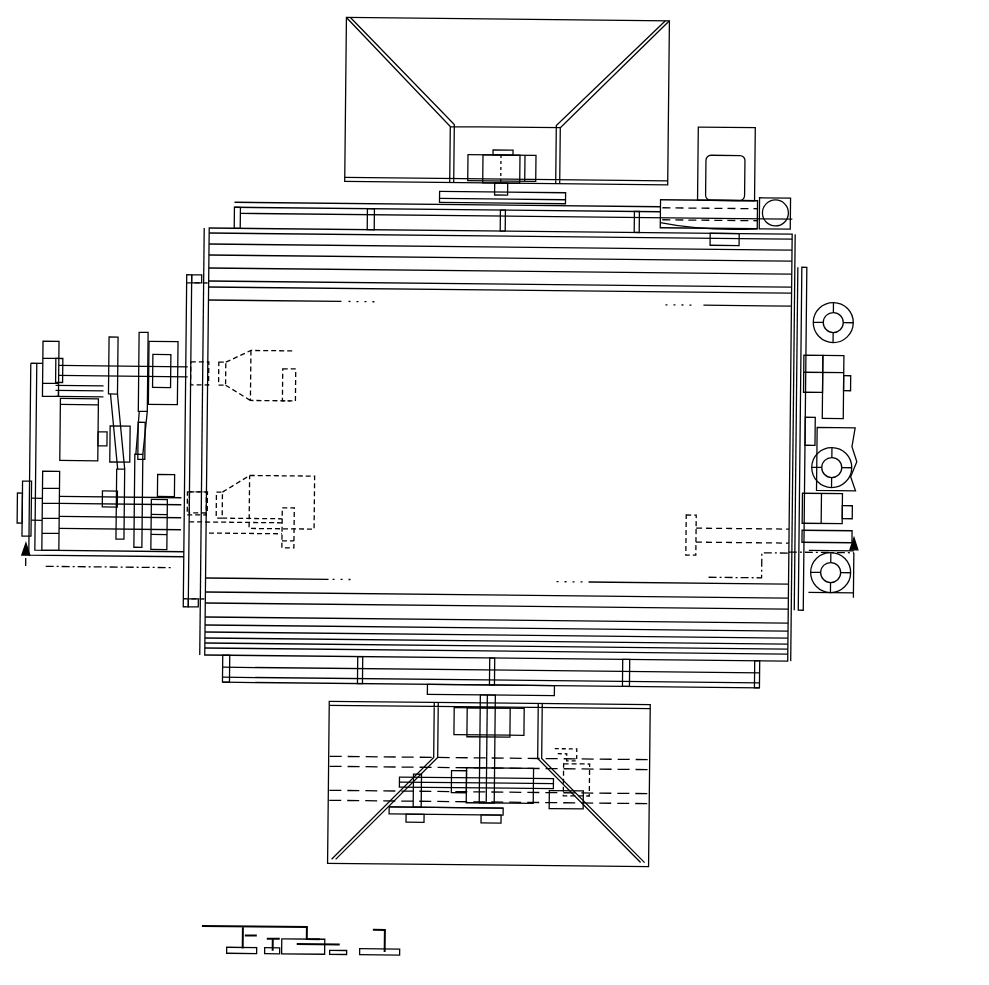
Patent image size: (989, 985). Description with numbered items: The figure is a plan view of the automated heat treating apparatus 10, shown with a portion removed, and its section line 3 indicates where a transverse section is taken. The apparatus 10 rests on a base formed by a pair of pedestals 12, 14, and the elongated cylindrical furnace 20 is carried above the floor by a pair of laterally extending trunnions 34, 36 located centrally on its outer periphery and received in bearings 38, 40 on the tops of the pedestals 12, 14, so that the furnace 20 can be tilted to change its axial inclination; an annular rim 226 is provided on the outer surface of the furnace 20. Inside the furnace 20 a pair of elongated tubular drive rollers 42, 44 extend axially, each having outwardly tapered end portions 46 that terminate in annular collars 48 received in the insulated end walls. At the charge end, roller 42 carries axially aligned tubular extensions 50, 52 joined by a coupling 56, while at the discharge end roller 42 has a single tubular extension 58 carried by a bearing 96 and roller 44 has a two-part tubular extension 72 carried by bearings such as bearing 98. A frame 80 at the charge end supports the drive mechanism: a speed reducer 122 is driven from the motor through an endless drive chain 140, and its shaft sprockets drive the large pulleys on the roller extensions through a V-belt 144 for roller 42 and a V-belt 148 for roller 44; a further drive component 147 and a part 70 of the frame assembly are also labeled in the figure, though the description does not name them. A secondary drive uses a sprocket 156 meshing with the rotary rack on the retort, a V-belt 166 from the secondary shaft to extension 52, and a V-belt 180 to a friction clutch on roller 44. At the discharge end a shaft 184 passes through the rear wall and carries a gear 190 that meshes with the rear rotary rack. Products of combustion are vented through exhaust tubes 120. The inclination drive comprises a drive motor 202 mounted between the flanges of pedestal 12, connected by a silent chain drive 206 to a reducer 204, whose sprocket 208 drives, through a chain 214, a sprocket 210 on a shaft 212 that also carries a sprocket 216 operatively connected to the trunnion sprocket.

The heat treating apparatus 10 is at (174, 223).
The pedestal 12 is at (345, 830).
The pedestal 14 is at (357, 117).
The furnace 20 is at (214, 661).
The trunnion 34 is at (483, 744).
The trunnion 36 is at (499, 147).
The bearing 38 is at (500, 721).
The bearing 40 is at (530, 170).
The drive roller 42 is at (292, 360).
The drive roller 44 is at (300, 525).
The end portion 46 is at (243, 355).
The annular collar 48 is at (220, 364).
The tubular extension 50 is at (170, 342).
The tubular extension 52 is at (85, 367).
The coupling 56 is at (83, 545).
The tubular extension 58 is at (803, 378).
The mounting bracket 70 is at (50, 473).
The tubular extension 72 is at (808, 505).
The frame 80 is at (44, 343).
The bearing 96 is at (805, 368).
The bearing 98 is at (812, 478).
The exhaust tube 120 is at (836, 296).
The speed reducer 122 is at (78, 455).
The drive chain 140 is at (138, 345).
The V-belt 144 is at (110, 380).
The belt 147 is at (110, 530).
The V-belt 148 is at (120, 535).
The sprocket 156 is at (296, 547).
The V-belt 166 is at (132, 468).
The V-belt 180 is at (40, 540).
The shaft 184 is at (745, 523).
The gear 190 is at (687, 531).
The drive motor 202 is at (580, 808).
The reducer 204 is at (498, 790).
The silent chain drive 206 is at (558, 750).
The sprocket 208 is at (483, 820).
The sprocket 210 is at (400, 812).
The shaft 212 is at (418, 820).
The chain 214 is at (455, 812).
The sprocket 216 is at (420, 777).
The annular rim 226 is at (196, 274).
The section line 3 is at (439, 572).